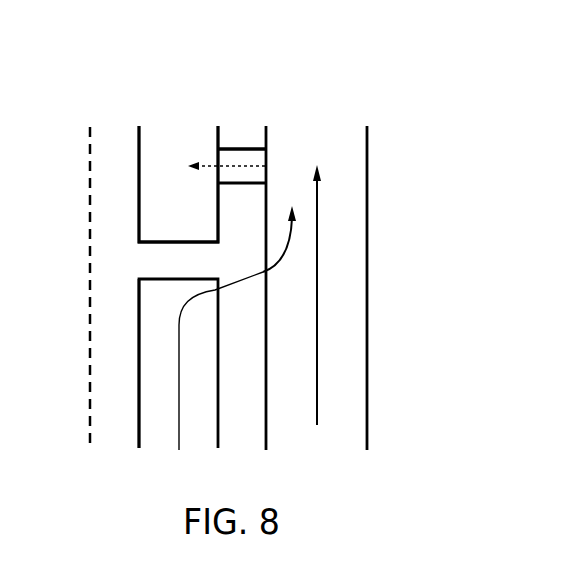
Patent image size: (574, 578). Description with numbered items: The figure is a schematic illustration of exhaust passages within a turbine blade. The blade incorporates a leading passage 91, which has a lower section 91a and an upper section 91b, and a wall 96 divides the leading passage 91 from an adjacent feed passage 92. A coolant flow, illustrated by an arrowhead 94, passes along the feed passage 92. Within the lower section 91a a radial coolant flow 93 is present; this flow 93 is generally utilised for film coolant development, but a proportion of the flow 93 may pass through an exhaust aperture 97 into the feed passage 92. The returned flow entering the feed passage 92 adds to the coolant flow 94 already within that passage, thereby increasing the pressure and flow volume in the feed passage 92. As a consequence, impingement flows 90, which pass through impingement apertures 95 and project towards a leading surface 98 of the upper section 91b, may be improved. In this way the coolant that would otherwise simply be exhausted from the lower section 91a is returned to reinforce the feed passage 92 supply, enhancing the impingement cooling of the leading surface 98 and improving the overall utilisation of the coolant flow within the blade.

The impingement flows 90 is at (235, 165).
The leading passage 91 is at (157, 328).
The lower section of leading passage 91a is at (153, 367).
The upper section of leading passage 91b is at (203, 224).
The feed passage 92 is at (307, 361).
The radial coolant flow 93 is at (179, 315).
The coolant flow 94 is at (317, 193).
The impingement apertures 95 is at (242, 150).
The wall 96 is at (230, 427).
The exhaust aperture 97 is at (247, 297).
The leading surface 98 is at (139, 150).